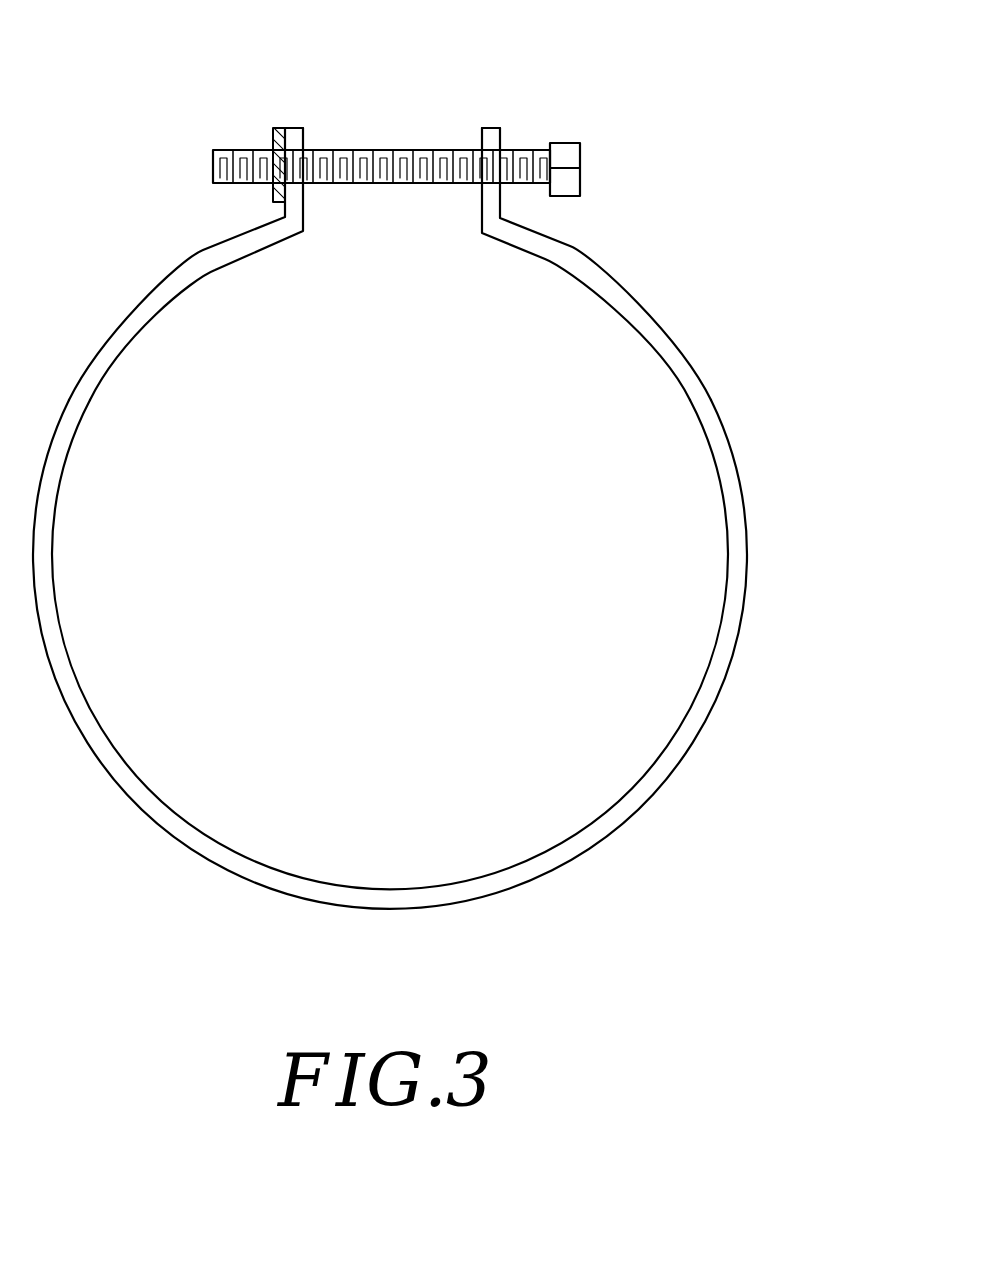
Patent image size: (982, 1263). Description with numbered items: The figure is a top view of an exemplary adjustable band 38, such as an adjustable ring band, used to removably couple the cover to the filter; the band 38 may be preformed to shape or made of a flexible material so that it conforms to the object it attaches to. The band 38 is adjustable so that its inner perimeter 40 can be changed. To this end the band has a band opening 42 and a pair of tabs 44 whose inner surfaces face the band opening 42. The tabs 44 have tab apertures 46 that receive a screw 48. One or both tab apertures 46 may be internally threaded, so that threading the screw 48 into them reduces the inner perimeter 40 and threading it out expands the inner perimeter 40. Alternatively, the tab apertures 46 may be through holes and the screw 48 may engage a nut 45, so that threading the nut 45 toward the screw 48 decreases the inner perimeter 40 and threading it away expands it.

The band 38 is at (440, 456).
The inner perimeter 40 is at (720, 483).
The band opening 42 is at (383, 208).
The tabs 44 is at (299, 128).
The nut 45 is at (273, 137).
The tab apertures 46 is at (278, 129).
The screw 48 is at (582, 155).